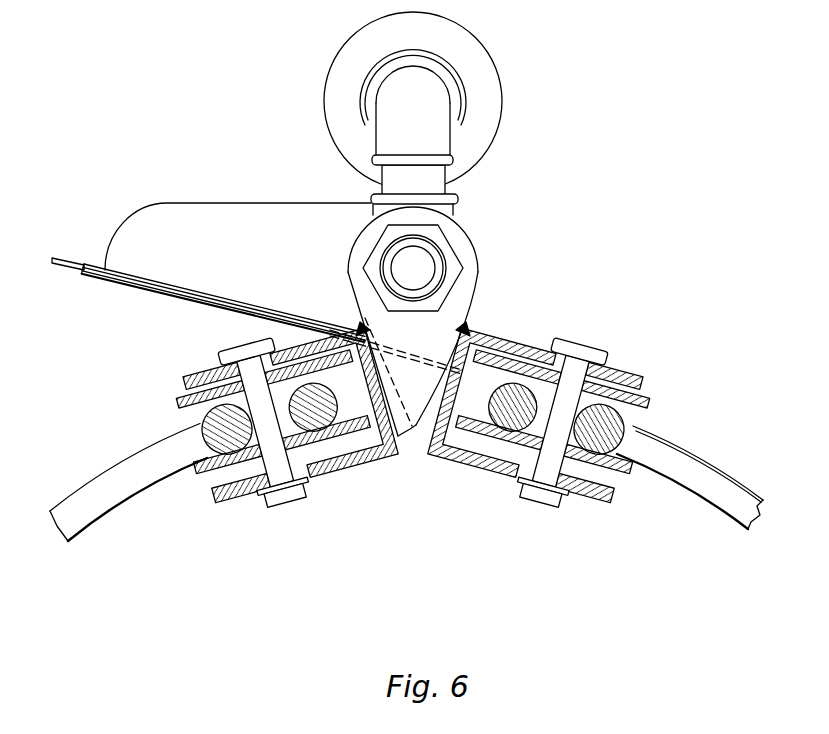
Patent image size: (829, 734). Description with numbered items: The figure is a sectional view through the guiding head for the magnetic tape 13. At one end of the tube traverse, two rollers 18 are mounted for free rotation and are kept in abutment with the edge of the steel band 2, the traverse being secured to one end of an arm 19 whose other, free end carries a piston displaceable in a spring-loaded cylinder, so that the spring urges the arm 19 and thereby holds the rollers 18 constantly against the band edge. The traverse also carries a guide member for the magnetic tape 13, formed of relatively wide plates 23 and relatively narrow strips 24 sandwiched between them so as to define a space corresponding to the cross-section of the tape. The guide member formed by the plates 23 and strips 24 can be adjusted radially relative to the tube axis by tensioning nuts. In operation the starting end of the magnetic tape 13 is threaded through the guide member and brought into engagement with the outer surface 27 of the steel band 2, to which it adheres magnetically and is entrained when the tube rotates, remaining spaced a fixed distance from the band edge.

The steel band 2 is at (690, 488).
The magnetic tape 13 is at (74, 260).
The rollers 18 is at (207, 448).
The arm 19 is at (437, 113).
The plates 23 is at (202, 297).
The strips 24 is at (224, 291).
The outer surface of the steel band 27 is at (710, 459).